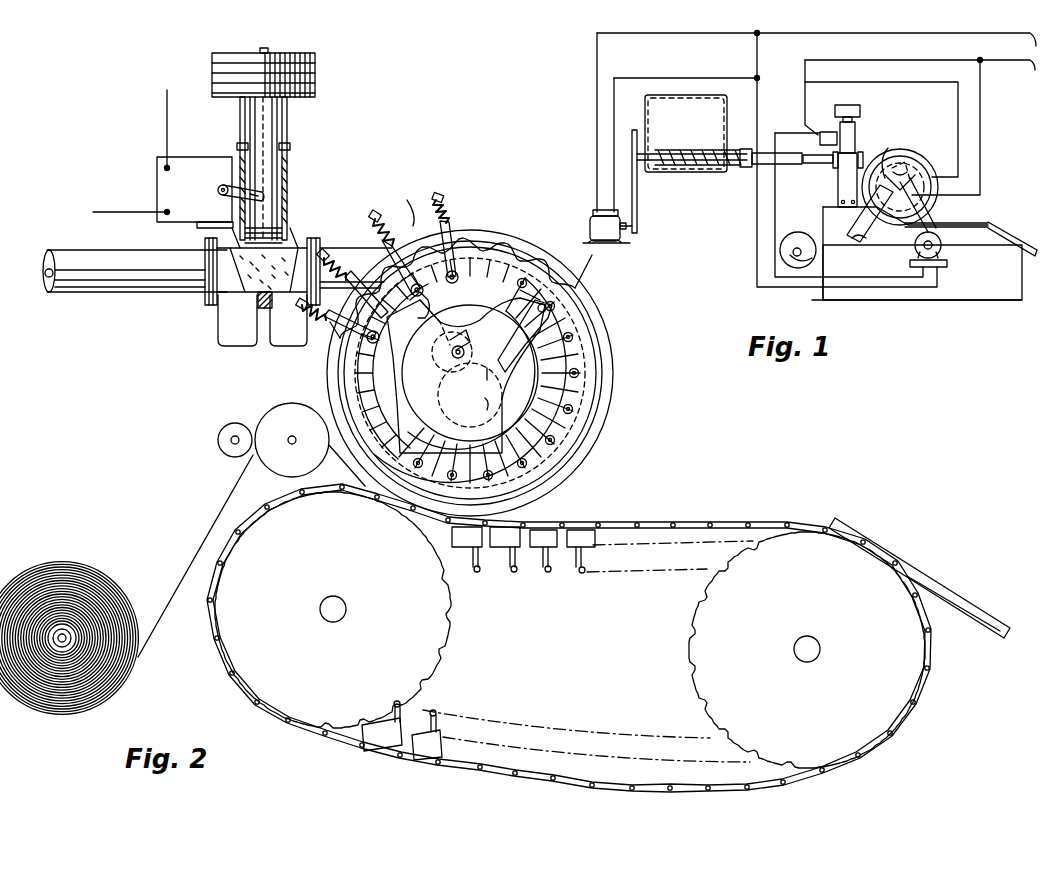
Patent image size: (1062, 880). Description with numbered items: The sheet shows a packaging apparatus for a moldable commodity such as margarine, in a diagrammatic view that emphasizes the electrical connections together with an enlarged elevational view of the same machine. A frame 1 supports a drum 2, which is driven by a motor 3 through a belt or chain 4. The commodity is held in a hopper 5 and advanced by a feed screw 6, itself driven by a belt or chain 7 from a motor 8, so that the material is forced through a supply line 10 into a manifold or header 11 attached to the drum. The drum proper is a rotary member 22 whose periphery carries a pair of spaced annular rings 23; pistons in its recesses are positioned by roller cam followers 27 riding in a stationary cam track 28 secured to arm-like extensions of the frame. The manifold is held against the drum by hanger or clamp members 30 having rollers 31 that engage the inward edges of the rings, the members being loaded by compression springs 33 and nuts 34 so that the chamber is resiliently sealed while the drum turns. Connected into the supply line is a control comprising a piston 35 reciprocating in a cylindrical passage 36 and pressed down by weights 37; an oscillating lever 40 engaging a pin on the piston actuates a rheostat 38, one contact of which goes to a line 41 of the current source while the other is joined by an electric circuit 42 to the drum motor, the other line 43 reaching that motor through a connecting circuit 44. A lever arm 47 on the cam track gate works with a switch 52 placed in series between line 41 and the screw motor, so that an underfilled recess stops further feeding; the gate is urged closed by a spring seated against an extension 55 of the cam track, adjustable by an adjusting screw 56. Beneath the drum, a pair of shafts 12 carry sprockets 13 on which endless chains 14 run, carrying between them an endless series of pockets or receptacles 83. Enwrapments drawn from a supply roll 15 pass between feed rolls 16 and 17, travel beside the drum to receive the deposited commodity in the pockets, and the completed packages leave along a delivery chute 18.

In FIG. 1, the frame 1 is at (813, 220).
In FIG. 1, the drum 2 is at (930, 168).
In FIG. 2, the drum 2 is at (614, 395).
In FIG. 1, the motor 3 is at (940, 255).
In FIG. 1, the belt or chain 4 is at (930, 218).
In FIG. 1, the hopper 5 is at (646, 112).
In FIG. 1, the feed screw 6 is at (684, 173).
In FIG. 1, the belt or chain 7 is at (640, 200).
In FIG. 1, the motor 8 is at (594, 222).
In FIG. 1, the supply line 10 is at (790, 165).
In FIG. 2, the supply line 10 is at (122, 287).
In FIG. 1, the manifold or header 11 is at (890, 146).
In FIG. 2, the manifold or header 11 is at (406, 205).
In FIG. 2, the shafts 12 is at (333, 611).
In FIG. 2, the sprockets 13 is at (283, 589).
In FIG. 2, the endless chains 14 is at (223, 664).
In FIG. 1, the supply roll 15 is at (780, 248).
In FIG. 2, the supply roll 15 is at (33, 567).
In FIG. 2, the feed roll 16 is at (217, 441).
In FIG. 2, the feed roll 17 is at (263, 425).
In FIG. 1, the delivery chute 18 is at (1014, 235).
In FIG. 2, the delivery chute 18 is at (986, 614).
In FIG. 2, the rotary member 22 is at (527, 420).
In FIG. 2, the annular rings 23 is at (598, 424).
In FIG. 2, the roller cam followers 27 is at (574, 350).
In FIG. 2, the cam track 28 is at (380, 382).
In FIG. 2, the hanger or clamp members 30 is at (462, 233).
In FIG. 2, the rollers 31 is at (482, 254).
In FIG. 2, the compression springs 33 is at (372, 230).
In FIG. 2, the nuts 34 is at (376, 216).
In FIG. 2, the piston 35 is at (290, 238).
In FIG. 2, the cylindrical passage 36 is at (262, 297).
In FIG. 1, the weights 37 is at (842, 108).
In FIG. 2, the weights 37 is at (317, 70).
In FIG. 1, the rheostat 38 is at (838, 133).
In FIG. 2, the rheostat 38 is at (157, 172).
In FIG. 2, the oscillating lever 40 is at (218, 192).
In FIG. 1, the line 41 is at (912, 127).
In FIG. 2, the line 41 is at (166, 93).
In FIG. 1, the electric circuit 42 is at (786, 132).
In FIG. 2, the electric circuit 42 is at (98, 208).
In FIG. 1, the line 43 is at (622, 37).
In FIG. 1, the connecting circuit 44 is at (757, 52).
In FIG. 2, the lever arm 47 is at (447, 348).
In FIG. 1, the switch 52 is at (907, 156).
In FIG. 2, the extension 55 is at (412, 390).
In FIG. 2, the adjusting screw 56 is at (432, 360).
In FIG. 2, the pockets or receptacles 83 is at (580, 538).